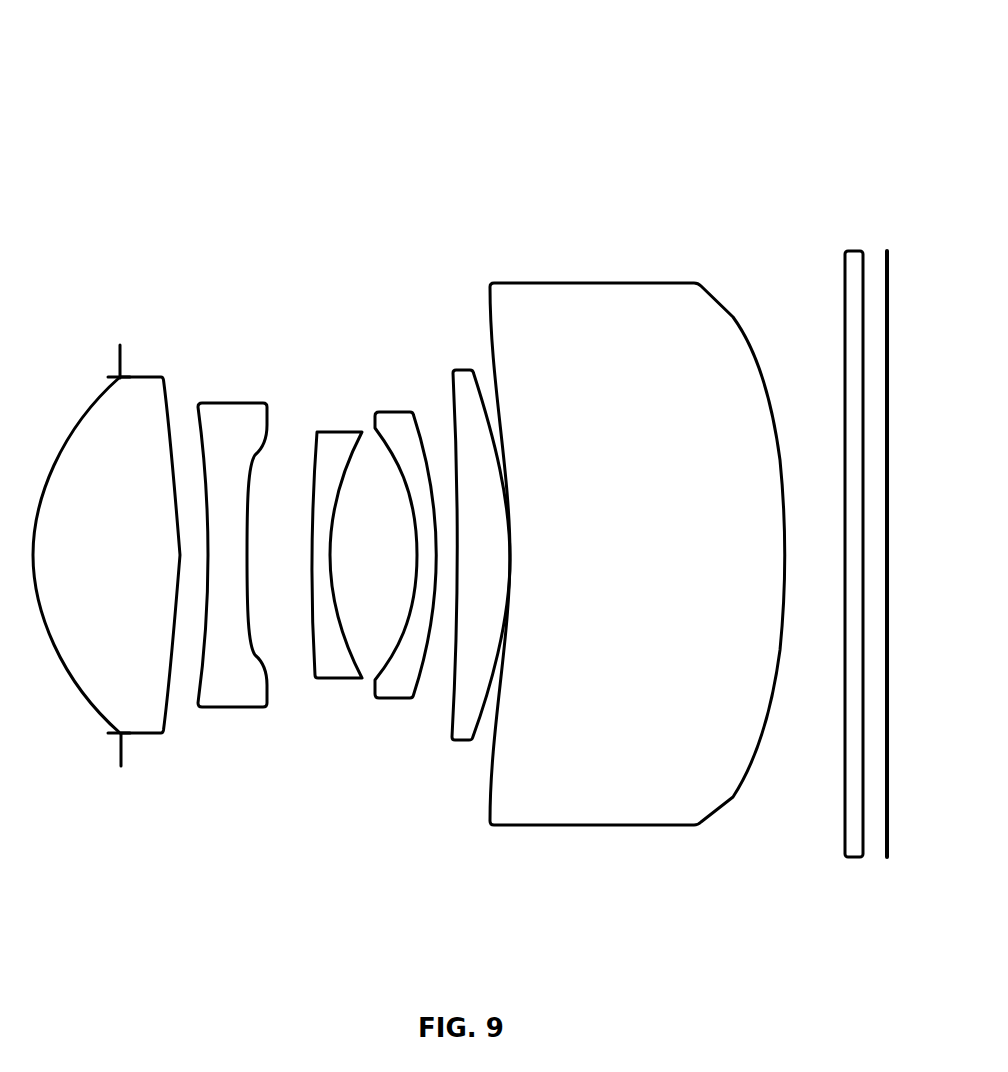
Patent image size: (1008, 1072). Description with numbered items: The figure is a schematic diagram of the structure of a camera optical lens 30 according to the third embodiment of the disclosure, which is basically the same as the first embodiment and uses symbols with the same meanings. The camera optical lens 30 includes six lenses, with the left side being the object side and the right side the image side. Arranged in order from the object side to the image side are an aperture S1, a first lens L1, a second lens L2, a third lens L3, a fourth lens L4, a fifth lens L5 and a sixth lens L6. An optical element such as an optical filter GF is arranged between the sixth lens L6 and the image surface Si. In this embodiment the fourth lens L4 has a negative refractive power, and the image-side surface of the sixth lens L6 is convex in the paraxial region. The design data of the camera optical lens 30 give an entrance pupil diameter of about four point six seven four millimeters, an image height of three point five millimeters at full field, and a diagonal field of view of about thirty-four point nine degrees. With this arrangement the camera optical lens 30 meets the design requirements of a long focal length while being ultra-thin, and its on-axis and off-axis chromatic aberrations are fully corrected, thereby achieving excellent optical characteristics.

The camera optical lens 30 is at (463, 46).
The aperture S1 is at (119, 542).
The first lens L1 is at (106, 538).
The second lens L2 is at (232, 540).
The third lens L3 is at (337, 539).
The fourth lens L4 is at (405, 541).
The fifth lens L5 is at (479, 539).
The sixth lens L6 is at (637, 538).
The optical filter GF is at (851, 539).
The image surface Si is at (881, 539).